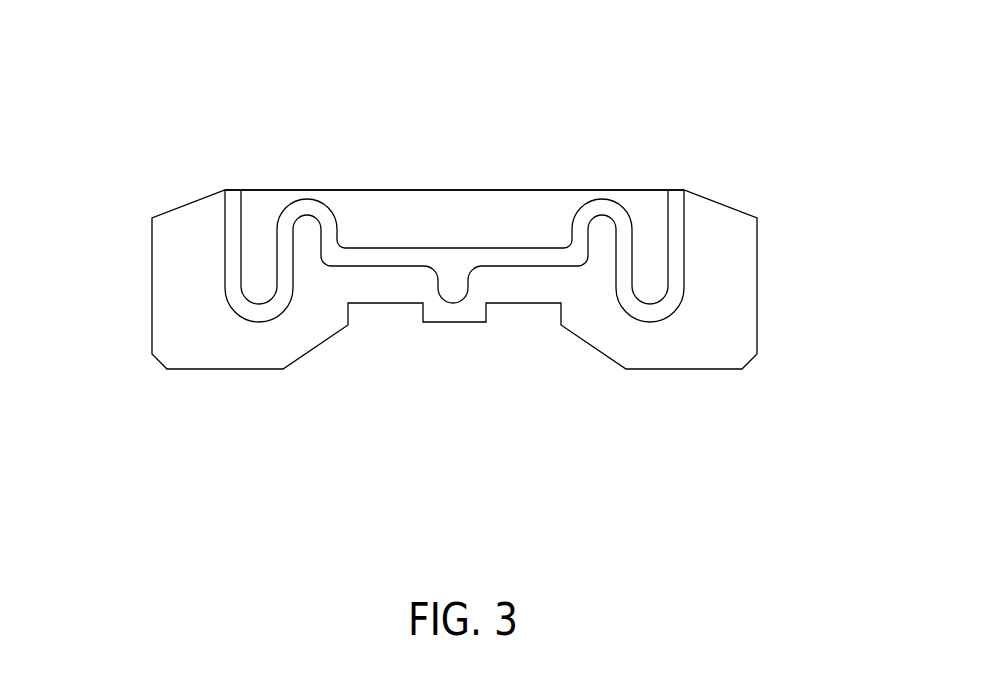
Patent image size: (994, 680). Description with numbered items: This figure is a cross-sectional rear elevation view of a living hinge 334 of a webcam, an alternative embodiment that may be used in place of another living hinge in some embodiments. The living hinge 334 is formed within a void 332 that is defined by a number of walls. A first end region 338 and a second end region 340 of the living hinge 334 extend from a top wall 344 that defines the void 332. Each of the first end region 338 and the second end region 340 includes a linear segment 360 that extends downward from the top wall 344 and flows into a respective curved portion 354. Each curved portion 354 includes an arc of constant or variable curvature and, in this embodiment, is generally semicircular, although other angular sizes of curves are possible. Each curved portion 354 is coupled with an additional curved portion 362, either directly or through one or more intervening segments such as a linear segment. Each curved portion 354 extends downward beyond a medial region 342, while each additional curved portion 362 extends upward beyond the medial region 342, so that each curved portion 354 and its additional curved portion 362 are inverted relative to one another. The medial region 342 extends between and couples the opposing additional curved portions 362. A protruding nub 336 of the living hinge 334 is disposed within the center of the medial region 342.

The void 332 is at (362, 205).
The living hinge 334 is at (204, 241).
The protruding nub 336 is at (454, 296).
The first end region 338 is at (276, 184).
The second end region 340 is at (615, 177).
The medial region 342 is at (437, 230).
The top wall 344 is at (530, 190).
The curved portion 354 is at (260, 323).
The linear segment 360 is at (684, 232).
The additional curved portion 362 is at (607, 193).